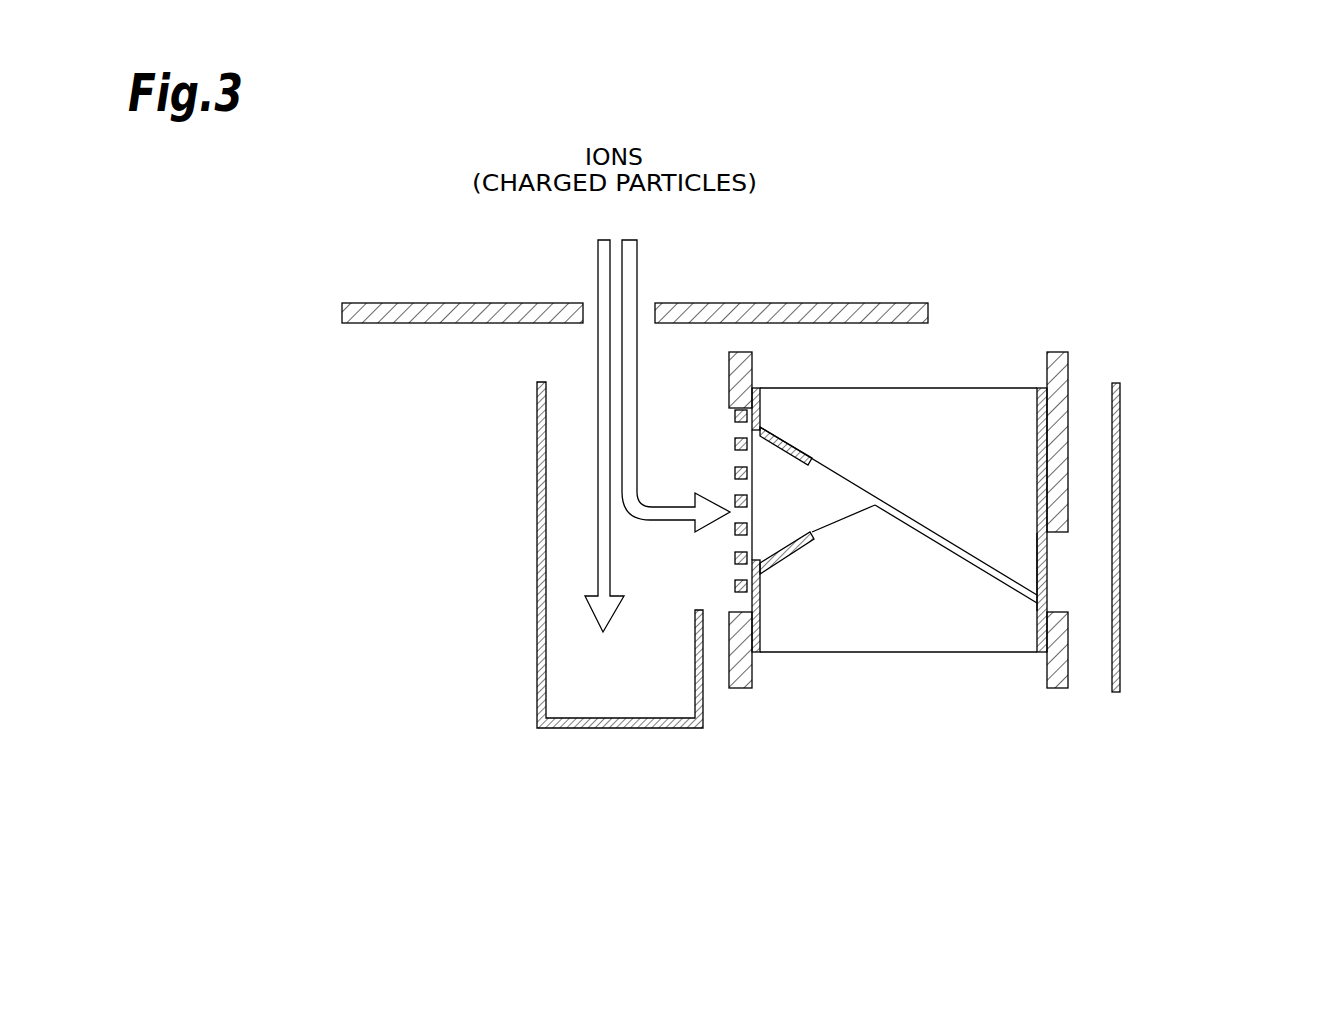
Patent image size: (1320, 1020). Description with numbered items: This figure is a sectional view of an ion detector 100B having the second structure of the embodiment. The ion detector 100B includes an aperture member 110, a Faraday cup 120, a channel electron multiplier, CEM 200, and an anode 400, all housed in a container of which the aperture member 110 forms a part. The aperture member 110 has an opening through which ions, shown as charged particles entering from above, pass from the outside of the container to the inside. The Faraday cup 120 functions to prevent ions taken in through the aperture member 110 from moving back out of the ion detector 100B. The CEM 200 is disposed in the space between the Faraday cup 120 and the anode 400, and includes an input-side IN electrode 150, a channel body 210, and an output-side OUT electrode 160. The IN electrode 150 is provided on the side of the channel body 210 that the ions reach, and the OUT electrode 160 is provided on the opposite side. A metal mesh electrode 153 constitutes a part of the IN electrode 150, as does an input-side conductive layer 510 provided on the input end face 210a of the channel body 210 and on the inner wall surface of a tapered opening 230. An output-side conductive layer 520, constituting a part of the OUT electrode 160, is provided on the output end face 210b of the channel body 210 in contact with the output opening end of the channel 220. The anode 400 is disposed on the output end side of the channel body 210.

The ion detector 100B is at (1160, 233).
The aperture member 110 is at (342, 308).
The Faraday cup 120 is at (538, 726).
The input-side electrode (IN electrode) 150 is at (737, 690).
The metal mesh electrode 153 is at (732, 440).
The output-side electrode (OUT electrode) 160 is at (1060, 690).
The channel electron multiplier (CEM) 200 is at (962, 358).
The channel body 210 is at (970, 412).
The input end face 210a is at (762, 410).
The output end face 210b is at (1028, 450).
The channel 220 is at (942, 548).
The tapered opening 230 is at (838, 507).
The anode 400 is at (1122, 443).
The input-side conductive layer 510 is at (803, 530).
The output-side conductive layer 520 is at (1047, 560).